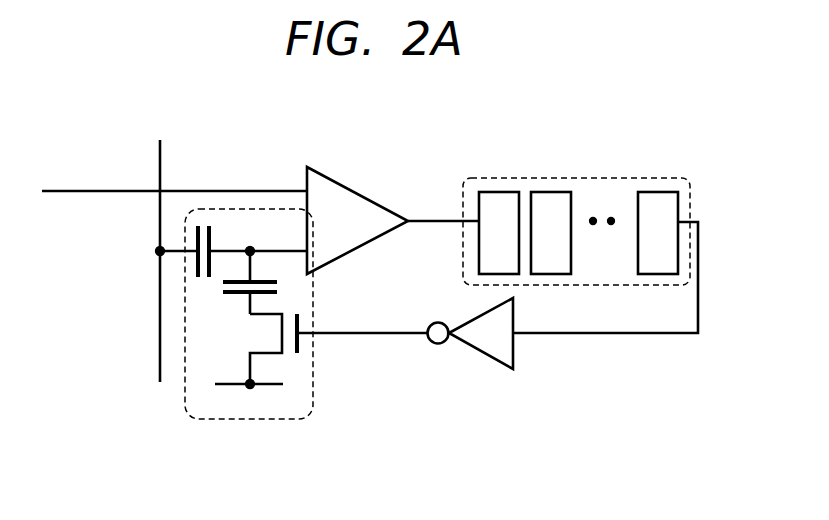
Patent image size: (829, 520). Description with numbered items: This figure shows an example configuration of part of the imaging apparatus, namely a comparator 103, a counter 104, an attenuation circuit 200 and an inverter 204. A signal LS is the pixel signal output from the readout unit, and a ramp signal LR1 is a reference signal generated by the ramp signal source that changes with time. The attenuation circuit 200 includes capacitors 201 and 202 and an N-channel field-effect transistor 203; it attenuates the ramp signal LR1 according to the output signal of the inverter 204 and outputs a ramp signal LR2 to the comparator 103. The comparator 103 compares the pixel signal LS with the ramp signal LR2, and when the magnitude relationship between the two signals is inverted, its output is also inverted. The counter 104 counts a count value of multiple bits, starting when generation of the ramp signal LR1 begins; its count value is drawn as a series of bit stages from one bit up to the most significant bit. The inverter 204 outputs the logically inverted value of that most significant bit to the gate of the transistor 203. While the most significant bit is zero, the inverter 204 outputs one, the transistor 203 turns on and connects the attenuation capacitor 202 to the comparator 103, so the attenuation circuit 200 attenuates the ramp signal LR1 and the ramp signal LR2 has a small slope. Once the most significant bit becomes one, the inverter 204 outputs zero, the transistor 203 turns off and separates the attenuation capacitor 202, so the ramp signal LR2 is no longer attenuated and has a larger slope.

The signal LS is at (85, 192).
The ramp signal LR1 is at (160, 293).
The ramp signal LR2 is at (283, 249).
The attenuation circuit 200 is at (185, 392).
The capacitor 201 is at (205, 222).
The attenuation capacitor 202 is at (223, 285).
The N-channel field-effect transistor 203 is at (289, 358).
The inverter 204 is at (480, 355).
The comparator 103 is at (366, 195).
The counter 104 is at (614, 177).